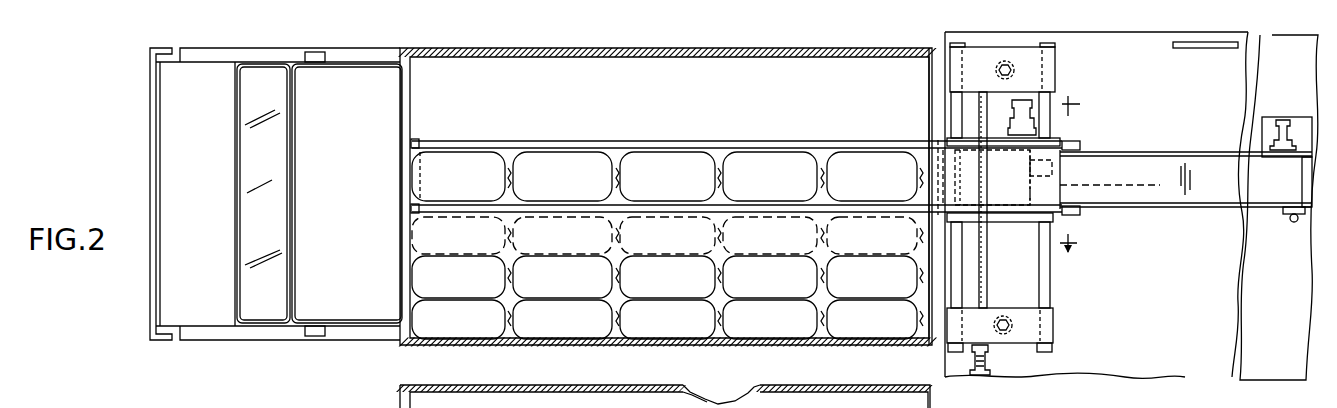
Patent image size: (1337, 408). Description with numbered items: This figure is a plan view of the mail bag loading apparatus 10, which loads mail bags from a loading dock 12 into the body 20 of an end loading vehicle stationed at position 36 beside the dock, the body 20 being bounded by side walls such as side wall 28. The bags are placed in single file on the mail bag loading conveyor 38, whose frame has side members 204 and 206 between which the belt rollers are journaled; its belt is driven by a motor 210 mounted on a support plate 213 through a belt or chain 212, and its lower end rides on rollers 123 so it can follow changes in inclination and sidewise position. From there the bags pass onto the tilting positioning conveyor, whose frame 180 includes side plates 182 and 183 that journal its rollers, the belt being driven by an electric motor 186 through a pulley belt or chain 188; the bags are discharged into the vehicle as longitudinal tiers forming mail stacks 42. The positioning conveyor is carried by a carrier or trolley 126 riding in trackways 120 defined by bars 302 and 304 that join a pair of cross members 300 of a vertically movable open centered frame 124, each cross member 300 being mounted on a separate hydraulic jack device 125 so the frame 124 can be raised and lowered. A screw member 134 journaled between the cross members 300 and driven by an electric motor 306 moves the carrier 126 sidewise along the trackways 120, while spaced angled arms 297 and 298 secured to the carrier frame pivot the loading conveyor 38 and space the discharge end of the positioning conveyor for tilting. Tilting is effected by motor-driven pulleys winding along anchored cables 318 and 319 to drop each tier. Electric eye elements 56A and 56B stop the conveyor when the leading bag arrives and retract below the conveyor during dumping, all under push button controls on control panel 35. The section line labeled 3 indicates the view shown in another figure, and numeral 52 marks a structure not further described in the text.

The section line 3- 3 is at (1077, 174).
The apparatus embodiment 10 is at (1279, 221).
The loading dock 12 is at (1175, 350).
The body 20 is at (880, 374).
The side wall 28 is at (790, 401).
The control panel 35 is at (1240, 45).
The position 36 is at (932, 41).
The mail bag loading conveyor 38 is at (1168, 149).
The mail stacks 42 is at (398, 332).
The hidden support 52 is at (1048, 196).
The electric eye element 56A is at (404, 211).
The electric eye element 56B is at (412, 141).
The trackways 120 is at (955, 111).
The rollers 123 is at (1294, 227).
The frame 124 is at (1062, 353).
The hydraulic jack devices 125 is at (1026, 57).
The carrier or trolley 126 is at (945, 136).
The screw member 134 is at (988, 290).
The frame 180 is at (780, 139).
The side plate 182 is at (751, 215).
The side plate 183 is at (813, 148).
The electric motor 186 is at (963, 80).
The pulley belt or chain 188 is at (1050, 128).
The side member 204 is at (1196, 208).
The side member 206 is at (1183, 153).
The motor 210 is at (1263, 118).
The belt or chain 212 is at (1297, 158).
The support plate 213 is at (1300, 118).
The angled arm 297 is at (1080, 216).
The angled arm 298 is at (1066, 145).
The cross members 300 is at (1057, 85).
The bar 302 is at (934, 255).
The bar 304 is at (1051, 285).
The electric motor 306 is at (982, 368).
The cable 318 is at (1080, 179).
The cable 319 is at (1100, 190).